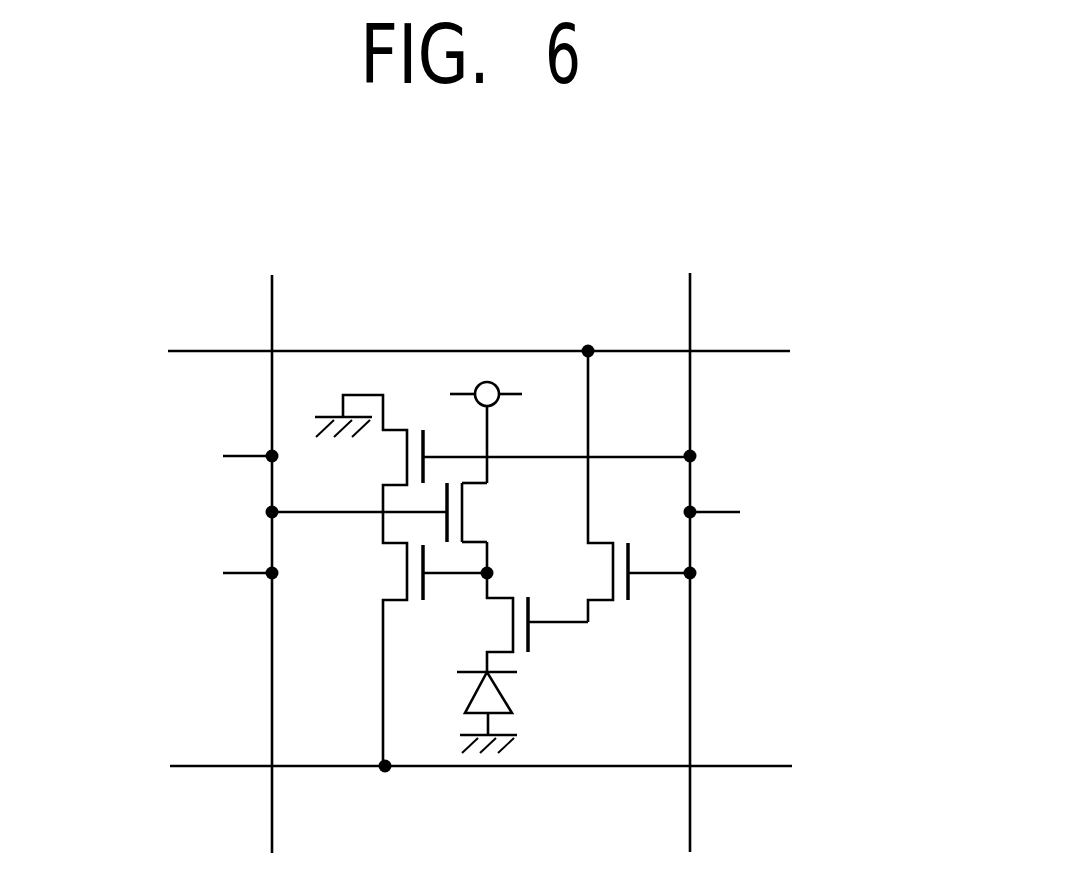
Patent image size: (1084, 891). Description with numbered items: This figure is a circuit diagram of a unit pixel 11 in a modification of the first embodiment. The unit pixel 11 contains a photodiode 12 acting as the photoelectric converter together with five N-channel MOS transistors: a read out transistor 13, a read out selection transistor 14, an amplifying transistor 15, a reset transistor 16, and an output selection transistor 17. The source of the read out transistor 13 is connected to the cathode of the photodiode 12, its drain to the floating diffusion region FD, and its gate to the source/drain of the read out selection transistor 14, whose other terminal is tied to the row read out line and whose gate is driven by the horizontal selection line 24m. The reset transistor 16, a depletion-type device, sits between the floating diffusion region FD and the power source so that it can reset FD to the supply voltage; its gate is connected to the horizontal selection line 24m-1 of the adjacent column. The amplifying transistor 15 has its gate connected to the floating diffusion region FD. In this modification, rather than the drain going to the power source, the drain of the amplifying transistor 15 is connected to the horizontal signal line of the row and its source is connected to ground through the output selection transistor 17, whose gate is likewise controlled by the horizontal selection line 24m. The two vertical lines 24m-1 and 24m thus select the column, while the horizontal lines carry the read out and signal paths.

The unit pixel 11 is at (763, 292).
The photodiode 12 is at (507, 692).
The read out transistor 13 is at (500, 629).
The read out selection transistor 14 is at (602, 605).
The amplifying transistor 15 is at (398, 572).
The reset transistor 16 is at (473, 508).
The output selection transistor 17 is at (398, 450).
The horizontal selection line 24m-1 is at (272, 835).
The horizontal selection line 24m is at (690, 821).